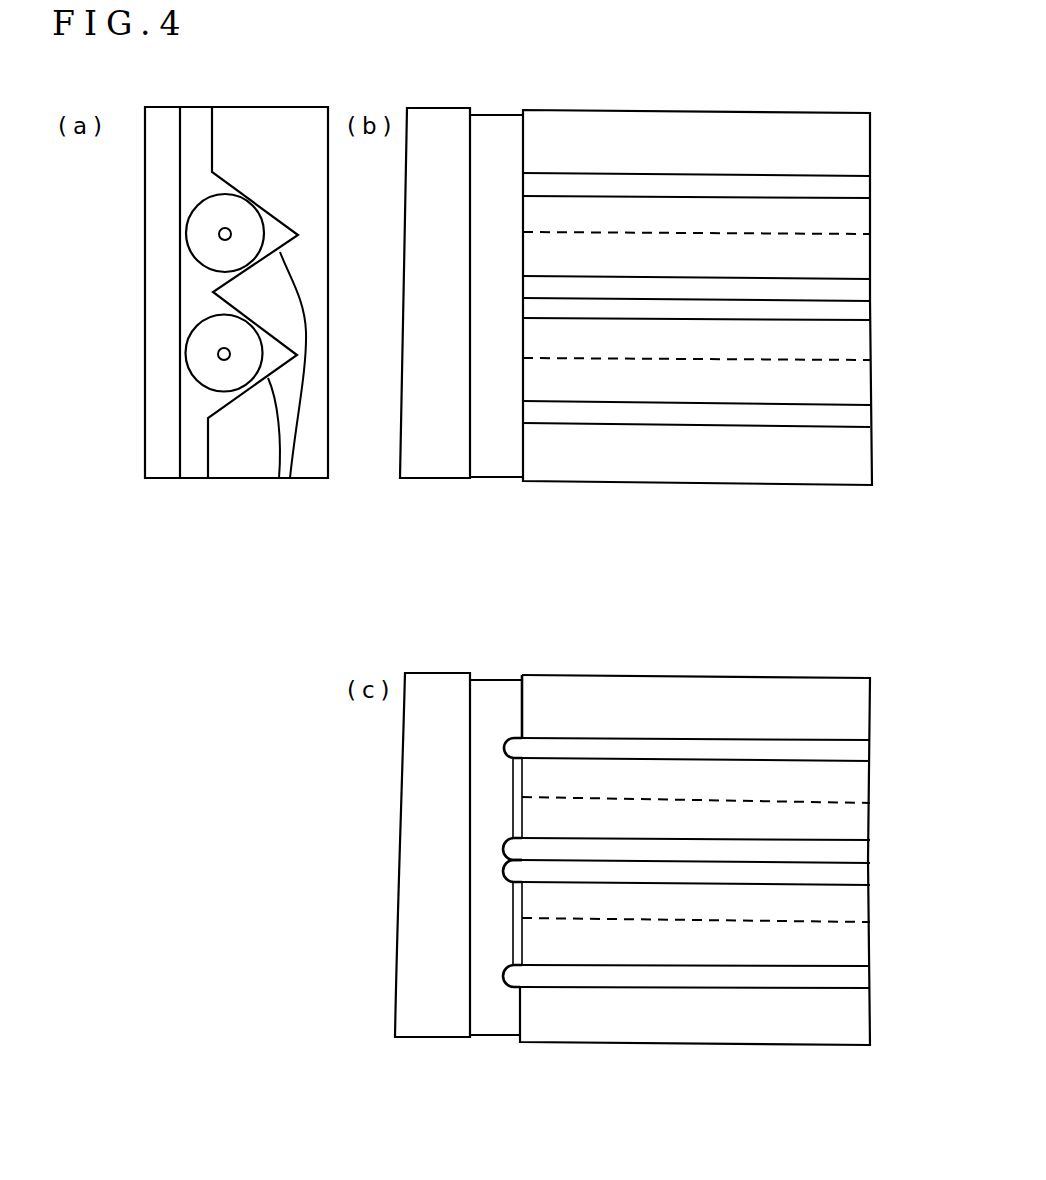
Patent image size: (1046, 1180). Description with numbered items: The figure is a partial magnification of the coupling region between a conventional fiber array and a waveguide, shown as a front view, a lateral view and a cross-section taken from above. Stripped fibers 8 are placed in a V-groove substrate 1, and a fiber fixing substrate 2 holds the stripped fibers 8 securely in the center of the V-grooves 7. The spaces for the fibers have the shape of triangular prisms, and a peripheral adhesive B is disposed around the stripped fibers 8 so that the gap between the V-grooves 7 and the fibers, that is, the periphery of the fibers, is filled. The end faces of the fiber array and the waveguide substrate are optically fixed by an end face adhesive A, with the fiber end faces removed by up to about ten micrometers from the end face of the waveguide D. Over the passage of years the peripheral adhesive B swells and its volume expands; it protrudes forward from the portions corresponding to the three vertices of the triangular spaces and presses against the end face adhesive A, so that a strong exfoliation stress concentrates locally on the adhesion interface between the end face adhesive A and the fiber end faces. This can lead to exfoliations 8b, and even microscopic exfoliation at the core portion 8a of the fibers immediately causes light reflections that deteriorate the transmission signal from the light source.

The V-groove substrate 1 is at (243, 460).
The fiber fixing substrate 2 is at (161, 458).
The V-grooves 7 is at (278, 458).
The stripped fibers 8 is at (208, 213).
The core portion 8a is at (847, 235).
The exfoliations 8b is at (518, 908).
The end face adhesive A is at (494, 458).
The peripheral adhesive B is at (193, 458).
The waveguide D is at (441, 452).